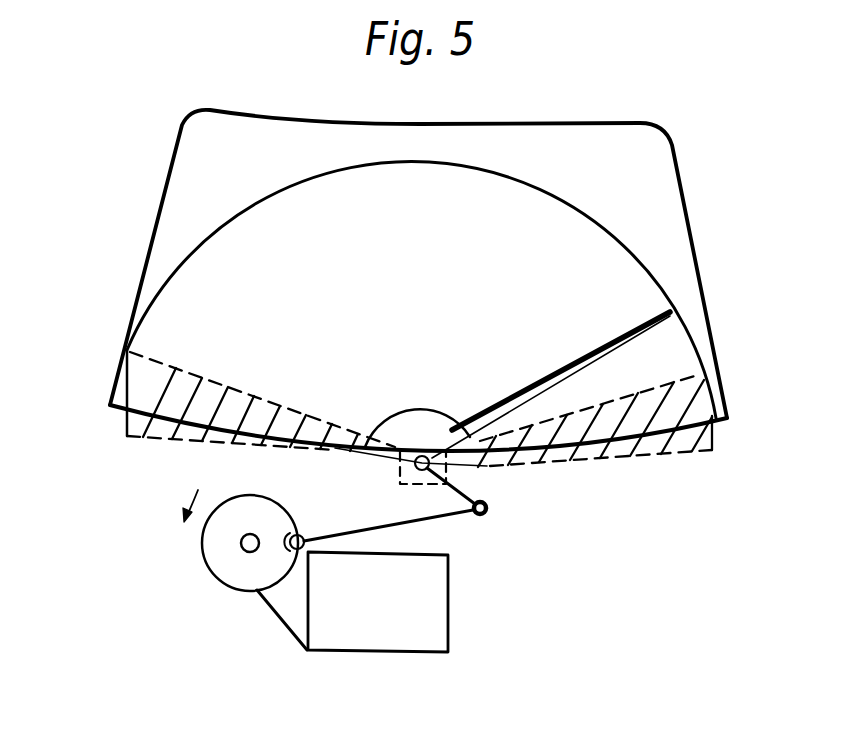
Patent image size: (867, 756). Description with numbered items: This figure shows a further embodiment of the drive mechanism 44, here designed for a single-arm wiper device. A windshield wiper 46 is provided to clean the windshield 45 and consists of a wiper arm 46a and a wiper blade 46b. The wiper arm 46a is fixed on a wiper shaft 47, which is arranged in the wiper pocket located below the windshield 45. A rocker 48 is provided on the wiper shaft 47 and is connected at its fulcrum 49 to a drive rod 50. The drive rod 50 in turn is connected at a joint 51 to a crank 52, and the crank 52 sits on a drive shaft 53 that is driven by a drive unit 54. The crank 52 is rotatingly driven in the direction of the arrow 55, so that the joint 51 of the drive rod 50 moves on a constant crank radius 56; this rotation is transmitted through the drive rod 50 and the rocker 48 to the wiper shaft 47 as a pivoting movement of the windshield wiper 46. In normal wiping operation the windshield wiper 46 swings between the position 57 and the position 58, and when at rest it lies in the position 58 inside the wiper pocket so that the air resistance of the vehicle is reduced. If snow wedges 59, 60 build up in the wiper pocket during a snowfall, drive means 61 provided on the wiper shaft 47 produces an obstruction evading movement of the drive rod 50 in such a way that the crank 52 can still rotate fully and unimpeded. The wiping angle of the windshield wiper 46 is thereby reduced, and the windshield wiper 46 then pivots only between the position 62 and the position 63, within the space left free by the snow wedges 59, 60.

The drive mechanism 44 is at (466, 572).
The windshield 45 is at (440, 272).
The windshield wiper 46 is at (533, 384).
The wiper arm 46a is at (457, 443).
The wiper blade 46b is at (612, 342).
The wiper shaft 47 is at (417, 456).
The rocker 48 is at (460, 493).
The fulcrum 49 is at (490, 514).
The drive rod 50 is at (440, 525).
The joint 51 is at (302, 533).
The crank 52 is at (240, 575).
The drive shaft 53 is at (242, 547).
The drive unit 54 is at (440, 640).
The arrow 55 is at (218, 483).
The crank radius 56 is at (253, 495).
The position 57 is at (122, 434).
The position 58 is at (712, 450).
The snow wedge 59 is at (173, 440).
The snow wedge 60 is at (630, 455).
The drive means 61 is at (405, 488).
The position 62 is at (127, 350).
The position 63 is at (700, 372).